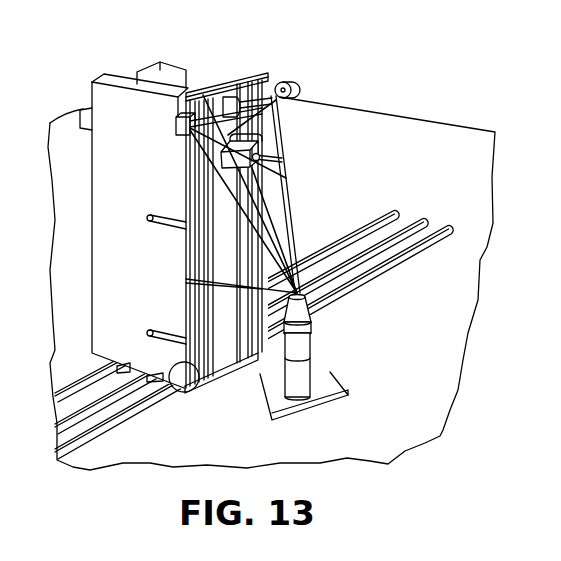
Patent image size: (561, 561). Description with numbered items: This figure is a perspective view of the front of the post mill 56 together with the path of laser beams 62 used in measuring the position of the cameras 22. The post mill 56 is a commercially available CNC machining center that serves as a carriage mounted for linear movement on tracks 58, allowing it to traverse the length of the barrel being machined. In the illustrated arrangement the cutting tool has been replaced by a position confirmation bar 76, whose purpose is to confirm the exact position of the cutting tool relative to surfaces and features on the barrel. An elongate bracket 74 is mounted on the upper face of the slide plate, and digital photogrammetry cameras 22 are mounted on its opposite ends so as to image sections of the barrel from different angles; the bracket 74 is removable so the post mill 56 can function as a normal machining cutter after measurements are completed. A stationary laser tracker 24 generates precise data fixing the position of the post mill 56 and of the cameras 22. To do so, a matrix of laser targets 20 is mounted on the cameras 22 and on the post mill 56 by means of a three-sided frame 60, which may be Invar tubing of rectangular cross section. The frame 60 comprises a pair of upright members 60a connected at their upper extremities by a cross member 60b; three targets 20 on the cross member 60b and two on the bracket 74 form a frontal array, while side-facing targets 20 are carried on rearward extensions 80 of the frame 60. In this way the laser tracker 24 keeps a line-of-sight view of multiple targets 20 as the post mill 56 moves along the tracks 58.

The laser targets 20 is at (150, 226).
The digital photogrammetry cameras 22 is at (188, 113).
The laser tracker 24 is at (311, 372).
The post mill 56 is at (118, 98).
The tracks 58 is at (401, 219).
The three-sided frame 60 is at (212, 78).
The upright members 60a is at (190, 393).
The cross member 60b is at (252, 77).
The cables 62 is at (268, 79).
The elongate bracket 74 is at (232, 103).
The position confirmation bar 76 is at (287, 128).
The rearward extensions 80 is at (167, 217).